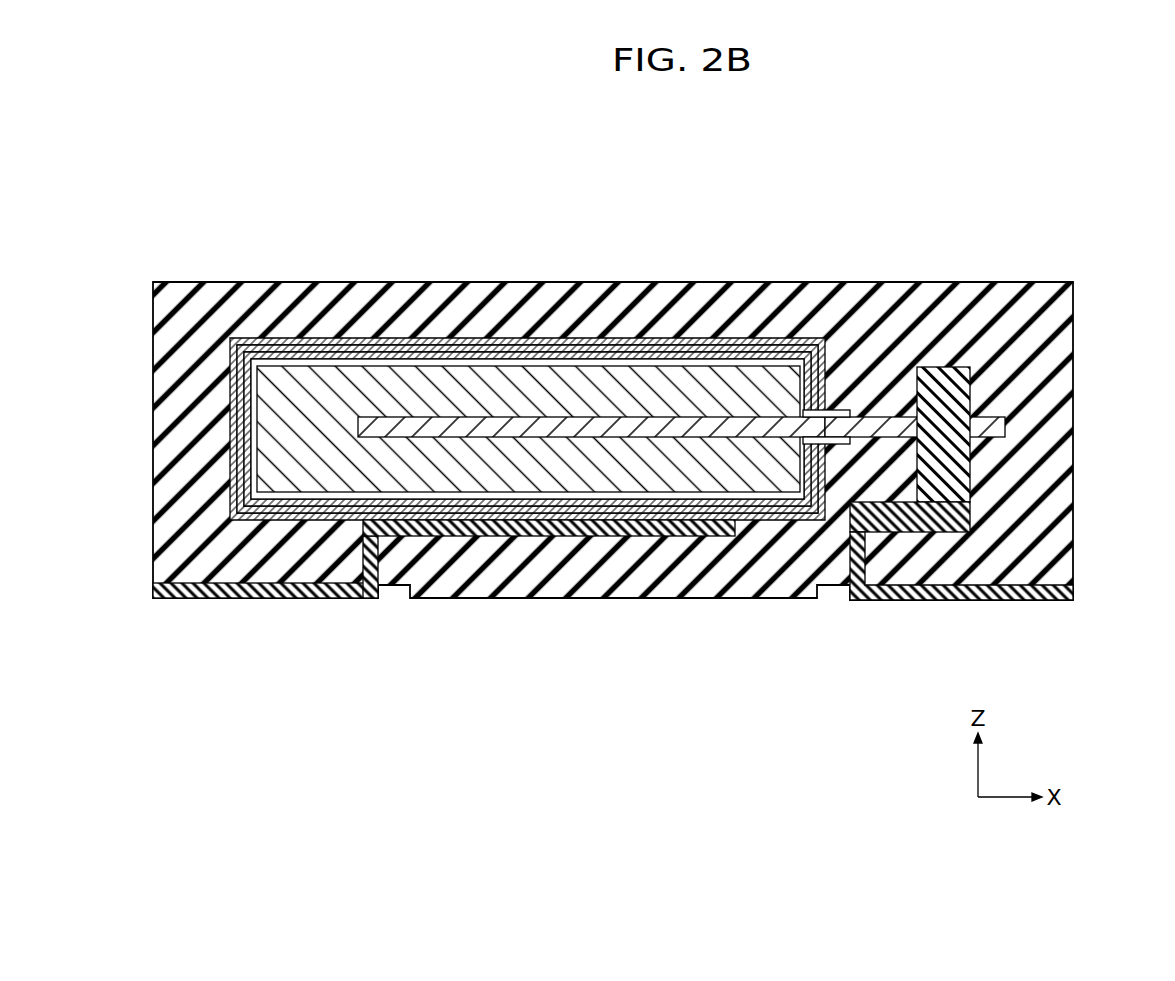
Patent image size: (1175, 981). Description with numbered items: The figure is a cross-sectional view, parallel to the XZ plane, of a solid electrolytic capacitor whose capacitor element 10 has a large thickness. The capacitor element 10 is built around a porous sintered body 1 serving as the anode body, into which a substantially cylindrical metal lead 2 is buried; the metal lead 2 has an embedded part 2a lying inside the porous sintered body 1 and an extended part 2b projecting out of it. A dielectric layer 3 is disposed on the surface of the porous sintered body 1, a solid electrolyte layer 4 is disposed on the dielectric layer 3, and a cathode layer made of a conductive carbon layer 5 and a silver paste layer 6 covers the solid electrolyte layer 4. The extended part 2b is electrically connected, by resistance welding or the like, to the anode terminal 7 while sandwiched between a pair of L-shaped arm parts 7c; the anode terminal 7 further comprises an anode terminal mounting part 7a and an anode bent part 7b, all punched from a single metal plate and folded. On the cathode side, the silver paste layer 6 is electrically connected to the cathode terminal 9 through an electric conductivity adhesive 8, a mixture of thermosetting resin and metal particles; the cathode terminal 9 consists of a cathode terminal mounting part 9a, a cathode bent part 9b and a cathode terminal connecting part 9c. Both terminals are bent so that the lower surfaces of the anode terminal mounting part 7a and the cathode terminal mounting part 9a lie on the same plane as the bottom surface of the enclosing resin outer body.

The porous sintered body 1 is at (530, 383).
The metal lead 2 is at (890, 325).
The embedded part 2a is at (800, 412).
The extended part 2b is at (882, 413).
The dielectric layer 3 is at (752, 417).
The solid electrolyte layer 4 is at (683, 358).
The conductive carbon layer 5 is at (640, 352).
The silver paste layer 6 is at (597, 342).
The anode terminal 7 is at (1004, 483).
The anode terminal mounting part 7a is at (987, 566).
The anode bent part 7b is at (866, 562).
The arm part 7c is at (958, 503).
The electric conductivity adhesive 8 is at (703, 542).
The cathode terminal 9 is at (444, 601).
The cathode terminal mounting part 9a is at (290, 598).
The cathode bent part 9b is at (370, 565).
The cathode terminal connecting part 9c is at (549, 583).
The capacitor element 10 is at (617, 343).